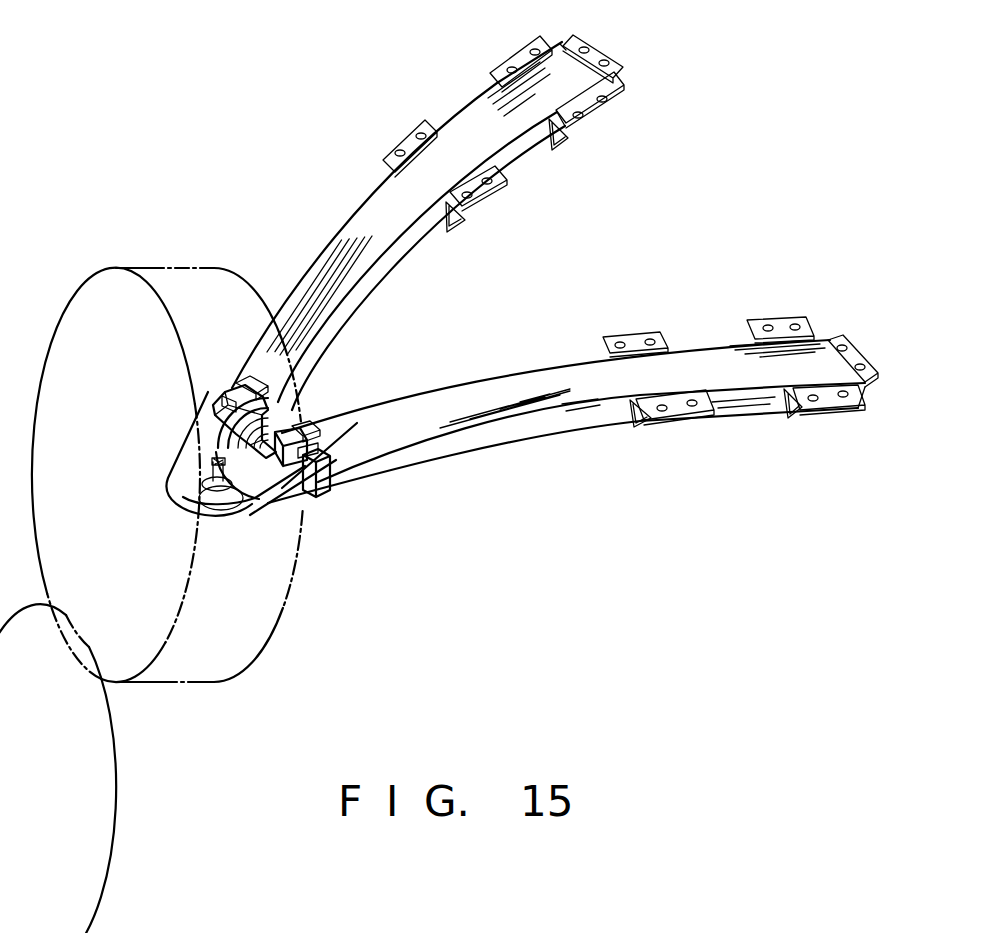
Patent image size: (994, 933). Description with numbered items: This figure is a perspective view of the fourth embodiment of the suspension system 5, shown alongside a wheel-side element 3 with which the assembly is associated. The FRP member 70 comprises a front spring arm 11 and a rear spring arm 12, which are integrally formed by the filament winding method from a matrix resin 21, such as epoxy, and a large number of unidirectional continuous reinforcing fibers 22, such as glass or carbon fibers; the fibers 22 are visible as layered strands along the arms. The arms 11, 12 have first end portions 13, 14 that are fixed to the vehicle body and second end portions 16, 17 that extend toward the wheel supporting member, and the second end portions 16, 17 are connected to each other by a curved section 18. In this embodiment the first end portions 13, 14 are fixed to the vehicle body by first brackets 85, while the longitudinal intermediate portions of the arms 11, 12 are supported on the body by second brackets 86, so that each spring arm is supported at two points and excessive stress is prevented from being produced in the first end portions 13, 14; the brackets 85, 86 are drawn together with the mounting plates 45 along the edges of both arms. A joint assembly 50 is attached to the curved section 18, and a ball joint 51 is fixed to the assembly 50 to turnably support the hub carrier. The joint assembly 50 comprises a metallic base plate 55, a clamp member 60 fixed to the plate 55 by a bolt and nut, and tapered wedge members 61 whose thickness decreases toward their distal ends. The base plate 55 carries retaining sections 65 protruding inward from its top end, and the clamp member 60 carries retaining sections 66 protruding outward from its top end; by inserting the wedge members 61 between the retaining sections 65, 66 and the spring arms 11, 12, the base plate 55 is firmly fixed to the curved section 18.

The drum 3 is at (297, 597).
The suspension system 5 is at (342, 133).
The front spring arm 11 is at (399, 226).
The rear spring arm 12 is at (566, 383).
The first end portion 13 is at (513, 111).
The first end portion 14 is at (768, 377).
The second end portion 16 is at (250, 395).
The second end portion 17 is at (352, 480).
The curved section 18 is at (217, 437).
The matrix resin 21 is at (312, 279).
The reinforcing fibers 22 is at (391, 212).
The mounting plates 45 is at (600, 45).
The joint assembly 50 is at (226, 528).
The ball joint 51 is at (195, 490).
The base plate 55 is at (282, 508).
The clamp member 60 is at (290, 412).
The wedge member 61 is at (210, 428).
The retaining sections 65 is at (238, 398).
The retaining sections 66 is at (258, 383).
The FRP member 70 is at (563, 354).
The first brackets 85 is at (567, 143).
The second brackets 86 is at (463, 228).